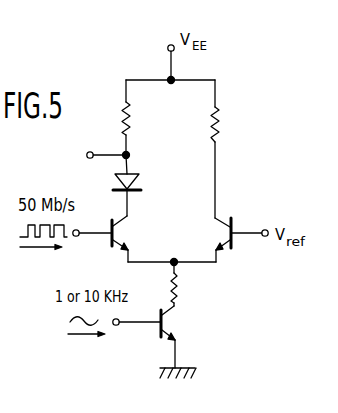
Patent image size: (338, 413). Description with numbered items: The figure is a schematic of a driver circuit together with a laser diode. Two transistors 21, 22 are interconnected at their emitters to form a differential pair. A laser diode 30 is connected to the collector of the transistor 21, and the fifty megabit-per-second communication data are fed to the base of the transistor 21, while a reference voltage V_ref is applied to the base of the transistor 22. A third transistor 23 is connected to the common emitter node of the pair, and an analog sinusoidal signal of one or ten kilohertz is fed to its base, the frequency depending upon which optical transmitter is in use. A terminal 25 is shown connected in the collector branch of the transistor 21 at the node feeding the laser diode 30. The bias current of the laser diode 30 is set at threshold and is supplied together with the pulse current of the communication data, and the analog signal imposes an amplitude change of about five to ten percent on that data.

The transistor 21 is at (126, 236).
The transistor 22 is at (228, 233).
The transistor 23 is at (173, 323).
The terminal / node 25 is at (87, 156).
The laser diode 30 is at (139, 180).